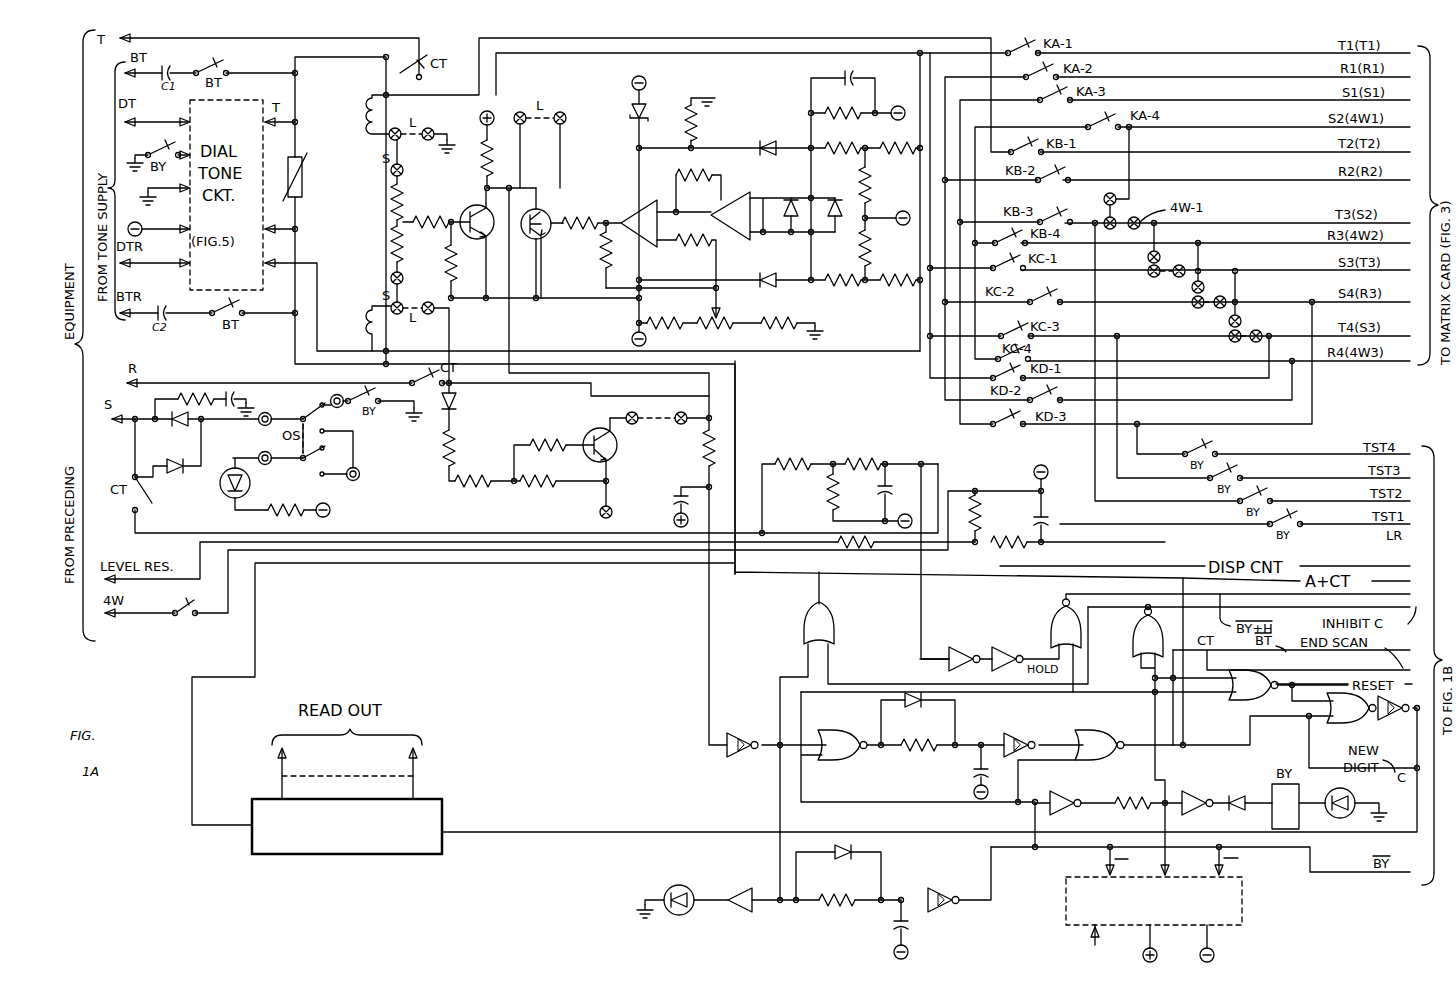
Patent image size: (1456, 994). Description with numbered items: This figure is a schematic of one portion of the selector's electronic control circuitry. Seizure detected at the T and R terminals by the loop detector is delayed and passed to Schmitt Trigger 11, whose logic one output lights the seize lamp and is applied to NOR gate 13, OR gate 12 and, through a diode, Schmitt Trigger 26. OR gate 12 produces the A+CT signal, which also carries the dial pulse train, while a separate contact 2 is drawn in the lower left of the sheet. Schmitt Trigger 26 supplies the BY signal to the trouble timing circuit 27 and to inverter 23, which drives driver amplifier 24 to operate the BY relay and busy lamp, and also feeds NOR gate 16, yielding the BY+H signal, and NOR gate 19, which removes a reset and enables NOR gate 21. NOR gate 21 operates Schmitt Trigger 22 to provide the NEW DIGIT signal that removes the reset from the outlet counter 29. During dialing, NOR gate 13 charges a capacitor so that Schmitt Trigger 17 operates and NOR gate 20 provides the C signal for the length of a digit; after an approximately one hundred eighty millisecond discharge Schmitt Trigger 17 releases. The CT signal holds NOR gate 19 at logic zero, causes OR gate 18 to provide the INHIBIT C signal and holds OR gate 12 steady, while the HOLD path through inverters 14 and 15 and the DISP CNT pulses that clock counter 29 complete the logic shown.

The CT switch contact 2 is at (193, 612).
The Schmitt Trigger 11 is at (751, 732).
The OR gate 12 is at (832, 626).
The NOR gate 13 is at (840, 762).
The inverter 14 is at (970, 654).
The inverter 15 is at (999, 655).
The NOR gate 16 is at (1055, 622).
The Schmitt Trigger 17 is at (1012, 737).
The OR gate 18 is at (1130, 644).
The NOR gate 19 is at (1248, 700).
The NOR gate 20 is at (1104, 734).
The NOR gate 21 is at (1333, 723).
The Schmitt Trigger 22 is at (1387, 719).
The inverter 23 is at (1072, 808).
The driver amplifier 24 is at (1200, 808).
The Schmitt Trigger 26 is at (950, 890).
The trouble timing circuit 27 is at (1242, 904).
The outlet counter 29 is at (334, 857).